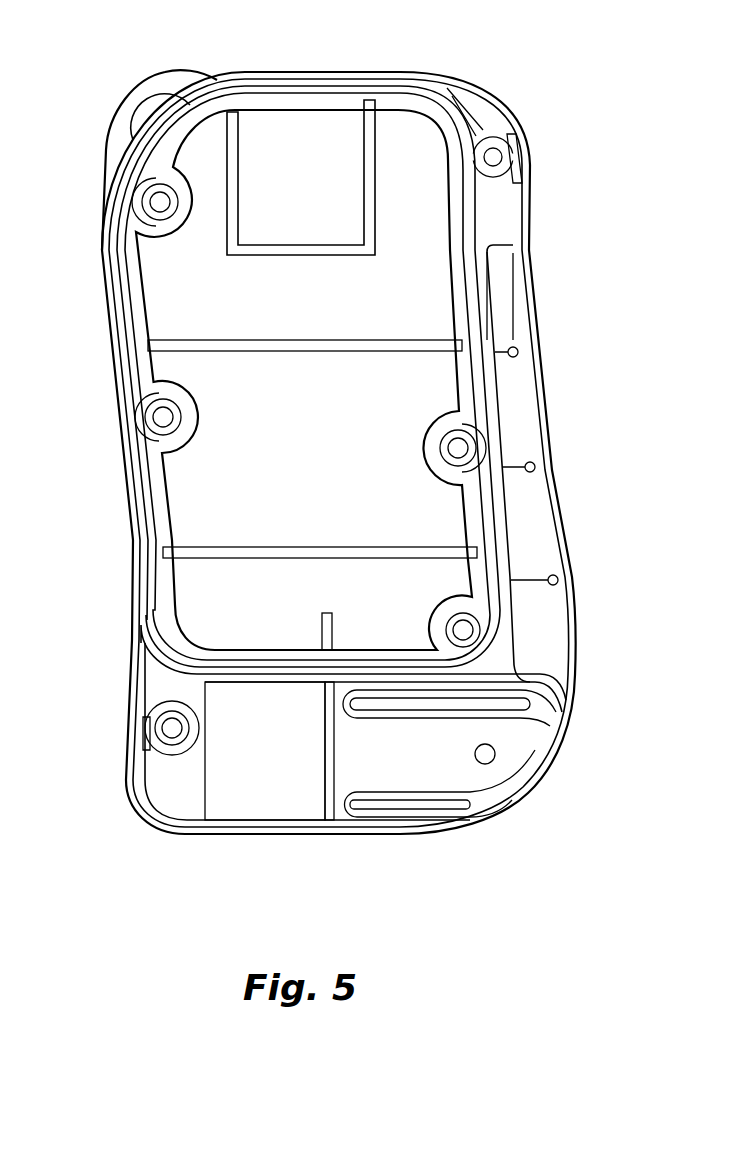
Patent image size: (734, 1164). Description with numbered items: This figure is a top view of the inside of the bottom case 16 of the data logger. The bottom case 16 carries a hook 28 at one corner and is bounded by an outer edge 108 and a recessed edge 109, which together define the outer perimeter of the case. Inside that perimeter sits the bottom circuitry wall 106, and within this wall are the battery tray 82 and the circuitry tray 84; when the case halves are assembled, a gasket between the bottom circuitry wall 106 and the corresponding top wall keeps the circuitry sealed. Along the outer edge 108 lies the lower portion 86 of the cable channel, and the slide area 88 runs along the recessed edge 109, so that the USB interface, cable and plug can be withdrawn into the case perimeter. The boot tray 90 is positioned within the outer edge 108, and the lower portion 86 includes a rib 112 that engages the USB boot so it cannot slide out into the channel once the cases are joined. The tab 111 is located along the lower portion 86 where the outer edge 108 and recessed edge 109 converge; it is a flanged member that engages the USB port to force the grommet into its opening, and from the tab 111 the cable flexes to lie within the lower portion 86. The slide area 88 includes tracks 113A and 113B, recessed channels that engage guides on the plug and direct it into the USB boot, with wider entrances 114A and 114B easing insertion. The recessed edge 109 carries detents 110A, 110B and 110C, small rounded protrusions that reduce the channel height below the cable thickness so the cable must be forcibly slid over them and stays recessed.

The bottom case 16 is at (470, 70).
The hook 28 is at (152, 88).
The battery tray 82 is at (295, 142).
The circuitry tray 84 is at (192, 508).
The lower portion of channel 86 is at (512, 405).
The slide area 88 is at (510, 763).
The boot tray 90 is at (240, 770).
The bottom circuitry wall 106 is at (498, 523).
The outer edge 108 is at (137, 783).
The recessed edge 109 is at (522, 294).
The detent 110A is at (518, 352).
The detent 110B is at (534, 463).
The detent 110C is at (558, 579).
The tab 111 is at (530, 190).
The rib 112 is at (330, 773).
The track 113A is at (440, 800).
The track 113B is at (520, 707).
The entrance 114A is at (487, 797).
The entrance 114B is at (553, 700).